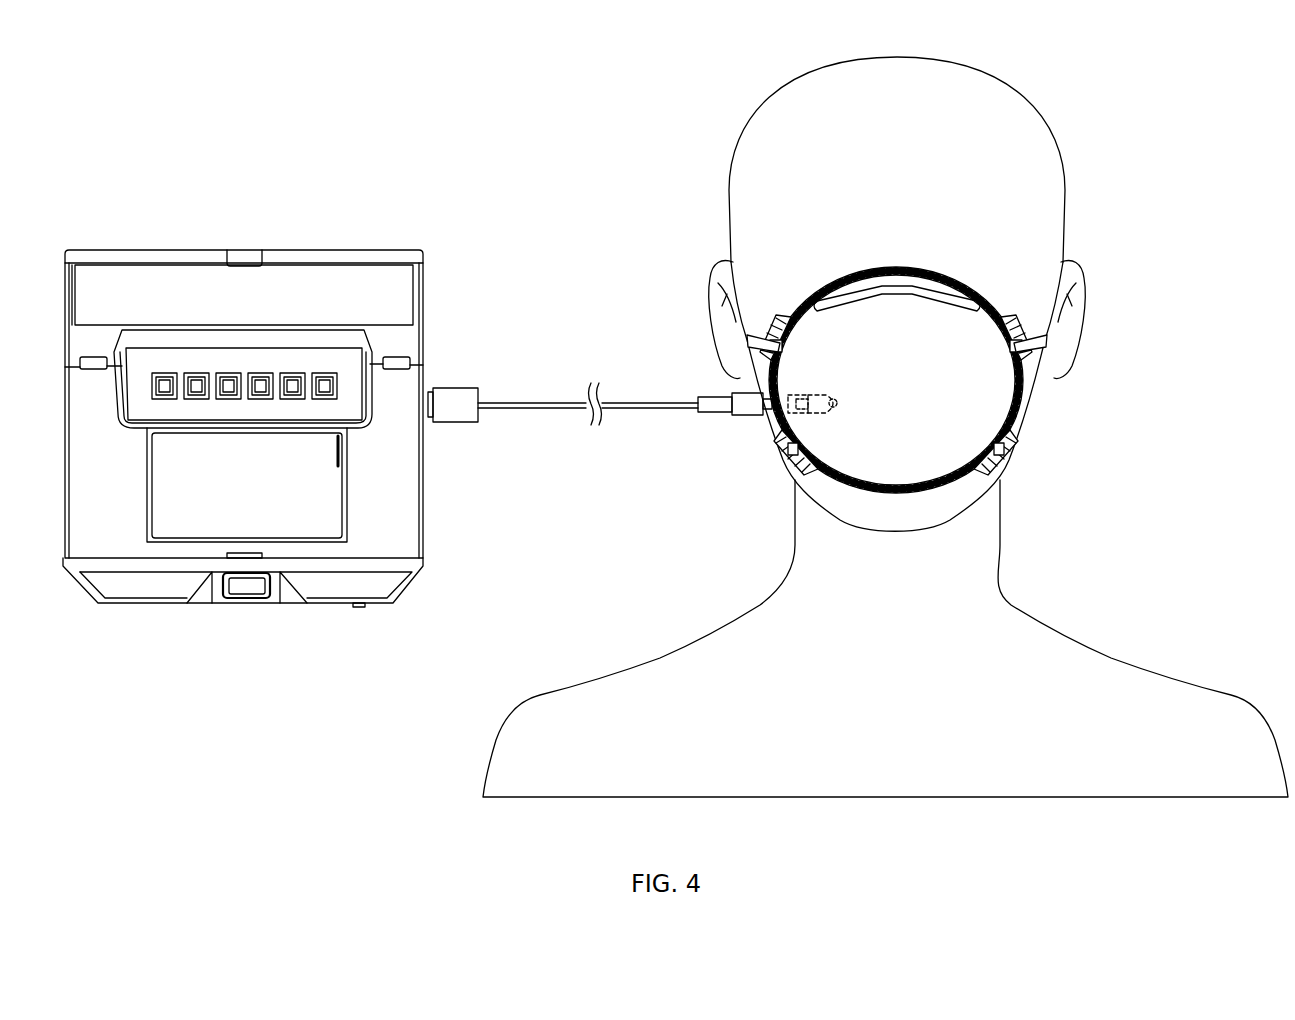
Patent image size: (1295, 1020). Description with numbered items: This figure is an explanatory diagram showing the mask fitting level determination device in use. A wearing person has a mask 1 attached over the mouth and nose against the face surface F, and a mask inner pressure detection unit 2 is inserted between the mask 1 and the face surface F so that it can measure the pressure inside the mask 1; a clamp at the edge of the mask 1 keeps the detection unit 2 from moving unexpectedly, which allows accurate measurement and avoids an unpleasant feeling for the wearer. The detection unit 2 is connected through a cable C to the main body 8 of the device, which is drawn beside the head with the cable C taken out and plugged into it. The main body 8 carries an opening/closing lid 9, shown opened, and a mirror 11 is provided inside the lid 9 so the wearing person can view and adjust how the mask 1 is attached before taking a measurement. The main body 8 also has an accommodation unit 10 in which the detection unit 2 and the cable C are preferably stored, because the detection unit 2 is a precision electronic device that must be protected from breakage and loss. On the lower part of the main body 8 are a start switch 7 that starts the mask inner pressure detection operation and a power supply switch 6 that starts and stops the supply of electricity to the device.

The mask 1 is at (842, 484).
The mask inner pressure detection unit 2 is at (806, 416).
The power supply switch 6 is at (357, 607).
The start switch 7 is at (247, 590).
The main body 8 is at (67, 437).
The opening/closing lid 9 is at (173, 257).
The accommodation unit 10 is at (314, 492).
The mirror 11 is at (395, 286).
The cable C is at (545, 403).
The face surface F is at (1023, 411).